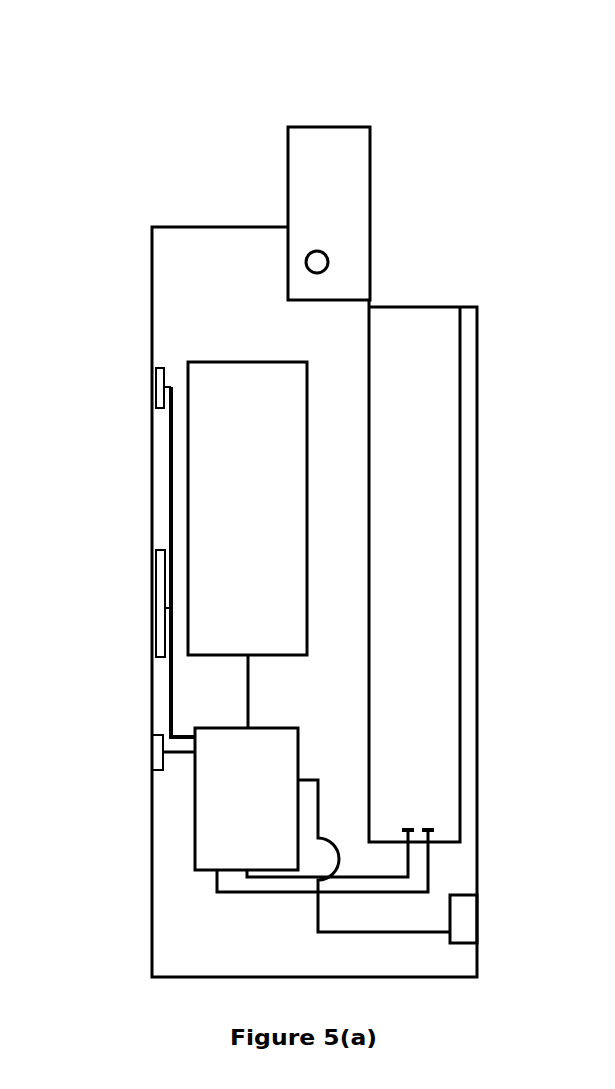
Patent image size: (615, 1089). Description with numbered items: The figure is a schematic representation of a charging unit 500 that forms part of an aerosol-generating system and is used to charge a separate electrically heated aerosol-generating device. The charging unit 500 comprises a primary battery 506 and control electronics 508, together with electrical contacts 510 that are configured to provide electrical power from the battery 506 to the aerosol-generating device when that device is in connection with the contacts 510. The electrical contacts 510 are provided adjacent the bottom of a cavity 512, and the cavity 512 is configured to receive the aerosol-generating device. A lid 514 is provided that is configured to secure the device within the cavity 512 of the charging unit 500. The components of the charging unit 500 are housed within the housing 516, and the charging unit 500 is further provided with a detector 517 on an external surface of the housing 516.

The charging unit 500 is at (144, 161).
The primary battery 506 is at (200, 490).
The control electronics 508 is at (215, 763).
The electrical contacts 510 is at (430, 808).
The cavity 512 is at (443, 417).
The lid 514 is at (325, 120).
The housing 516 is at (163, 905).
The detector 517 is at (470, 925).